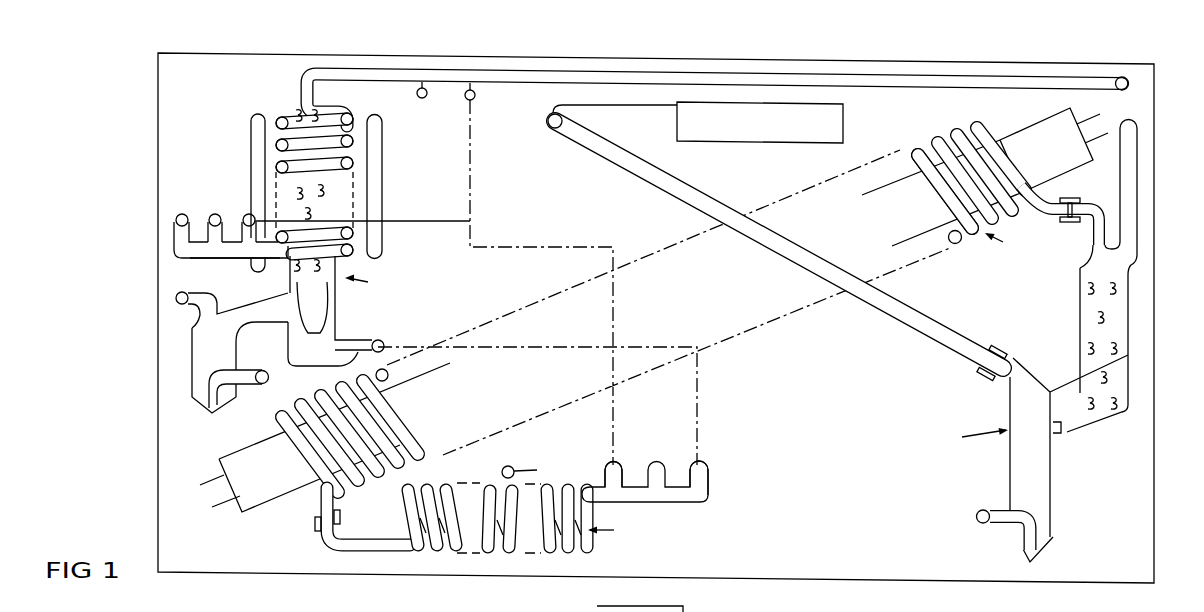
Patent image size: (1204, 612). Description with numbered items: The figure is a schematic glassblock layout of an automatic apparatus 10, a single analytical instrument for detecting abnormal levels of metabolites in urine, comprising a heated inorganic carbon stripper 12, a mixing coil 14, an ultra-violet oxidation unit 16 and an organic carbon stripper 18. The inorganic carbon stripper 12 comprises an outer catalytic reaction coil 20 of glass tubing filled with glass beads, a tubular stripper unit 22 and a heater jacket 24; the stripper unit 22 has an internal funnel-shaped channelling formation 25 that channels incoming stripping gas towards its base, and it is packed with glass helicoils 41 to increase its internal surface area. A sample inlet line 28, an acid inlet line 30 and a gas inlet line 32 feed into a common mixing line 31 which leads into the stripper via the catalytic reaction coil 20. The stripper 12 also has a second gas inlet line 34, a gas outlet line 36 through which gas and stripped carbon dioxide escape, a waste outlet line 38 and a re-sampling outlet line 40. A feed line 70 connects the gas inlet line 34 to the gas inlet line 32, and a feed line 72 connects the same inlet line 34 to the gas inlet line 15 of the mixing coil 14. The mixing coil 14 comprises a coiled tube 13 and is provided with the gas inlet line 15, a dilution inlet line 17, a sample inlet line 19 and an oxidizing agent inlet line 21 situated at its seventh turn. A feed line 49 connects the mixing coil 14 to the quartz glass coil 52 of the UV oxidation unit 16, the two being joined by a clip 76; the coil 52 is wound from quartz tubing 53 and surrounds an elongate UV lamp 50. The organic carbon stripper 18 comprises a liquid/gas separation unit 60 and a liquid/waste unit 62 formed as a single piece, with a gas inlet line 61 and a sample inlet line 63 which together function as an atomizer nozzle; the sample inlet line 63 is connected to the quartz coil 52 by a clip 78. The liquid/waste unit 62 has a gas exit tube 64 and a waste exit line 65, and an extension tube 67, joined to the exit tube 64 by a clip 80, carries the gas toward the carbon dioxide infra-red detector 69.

The automatic apparatus 10 is at (1084, 43).
The heated inorganic carbon stripper 12 is at (241, 105).
The coiled tube 13 is at (505, 540).
The mixing coil 14 is at (445, 563).
The gas inlet line 15 is at (618, 465).
The ultra-violet oxidation unit 16 is at (727, 354).
The dilution inlet line 17 is at (660, 458).
The organic carbon stripper 18 is at (1134, 271).
The sample inlet line 19 is at (702, 466).
The outer catalytic reaction coil 20 is at (342, 167).
The oxidizing agent inlet line 21 is at (537, 470).
The tubular stripper unit 22 is at (352, 256).
The heater jacket 24 is at (383, 134).
The funnel-shaped channelling formation 25 is at (336, 320).
The sample inlet line 28 is at (197, 229).
The acid inlet line 30 is at (209, 221).
The common mixing line 31 is at (208, 260).
The gas inlet line 32 is at (246, 222).
The second gas inlet line 34 is at (366, 76).
The gas outlet line 36 is at (176, 298).
The waste outlet line 38 is at (250, 381).
The re-sampling outlet line 40 is at (353, 360).
The glass helicoils 41 is at (331, 196).
The feed line 49 is at (338, 530).
The UV lamp 50 is at (455, 412).
The quartz glass coil 52 is at (1010, 191).
The quartz tubing 53 is at (320, 497).
The liquid/gas separation unit 60 is at (1129, 333).
The gas inlet line 61 is at (1129, 197).
The liquid/waste unit 62 is at (1053, 493).
The sample inlet line 63 is at (1108, 185).
The gas exit tube 64 is at (990, 463).
The waste exit line 65 is at (993, 525).
The extension tube 67 is at (863, 293).
The CO2 infra-red detector 69 is at (761, 142).
The feed line 70 is at (400, 84).
The feed line 72 is at (481, 83).
The clip 76 is at (316, 528).
The clip 78 is at (1041, 268).
The clip 80 is at (1012, 350).